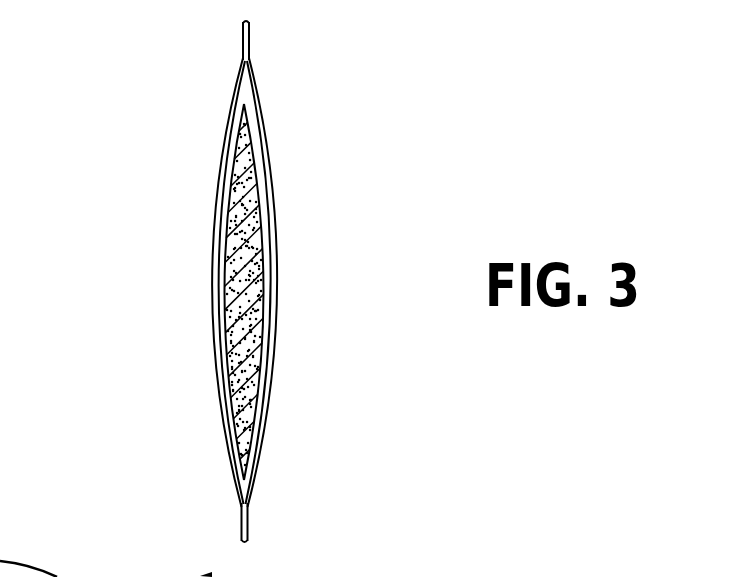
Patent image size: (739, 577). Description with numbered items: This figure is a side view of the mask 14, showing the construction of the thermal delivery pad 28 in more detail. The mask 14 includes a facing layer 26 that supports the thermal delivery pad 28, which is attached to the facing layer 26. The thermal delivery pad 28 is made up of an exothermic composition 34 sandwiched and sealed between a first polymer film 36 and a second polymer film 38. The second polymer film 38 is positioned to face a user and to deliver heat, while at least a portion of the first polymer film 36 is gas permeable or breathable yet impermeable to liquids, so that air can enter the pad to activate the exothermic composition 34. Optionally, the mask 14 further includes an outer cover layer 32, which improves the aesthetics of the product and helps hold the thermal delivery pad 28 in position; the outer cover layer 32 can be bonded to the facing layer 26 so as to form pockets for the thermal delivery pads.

The mask 14 is at (158, 193).
The facing layer 26 is at (265, 174).
The first thermal delivery pad 28 is at (252, 308).
The outer cover layer 32 is at (215, 368).
The exothermic composition 34 is at (252, 377).
The first polymer film 36 is at (227, 293).
The second polymer film 38 is at (262, 277).